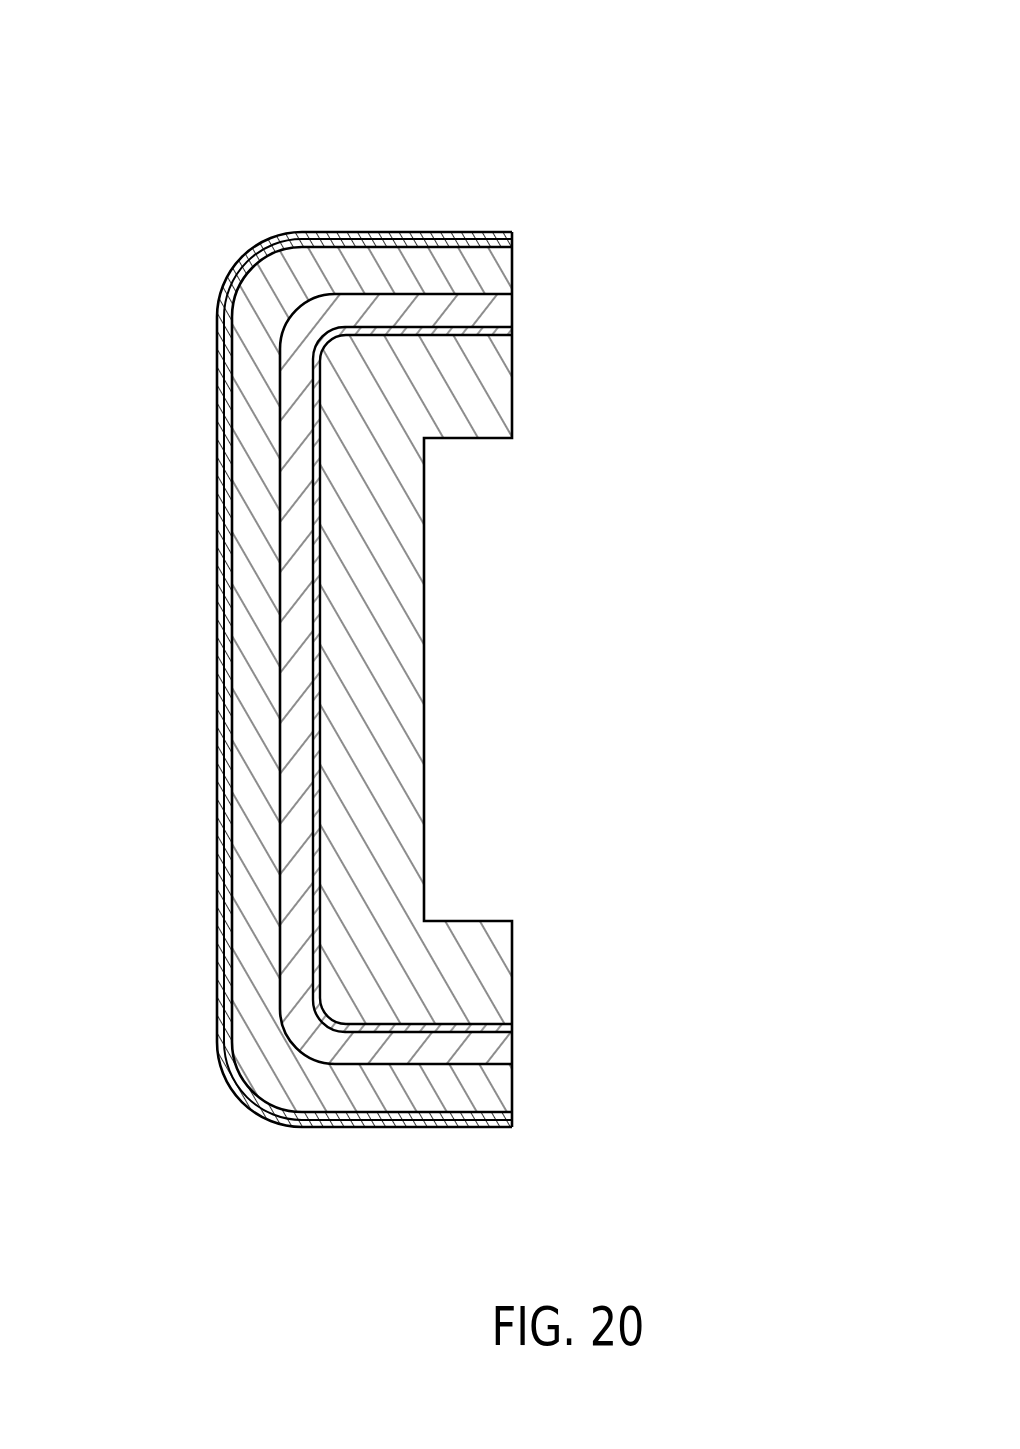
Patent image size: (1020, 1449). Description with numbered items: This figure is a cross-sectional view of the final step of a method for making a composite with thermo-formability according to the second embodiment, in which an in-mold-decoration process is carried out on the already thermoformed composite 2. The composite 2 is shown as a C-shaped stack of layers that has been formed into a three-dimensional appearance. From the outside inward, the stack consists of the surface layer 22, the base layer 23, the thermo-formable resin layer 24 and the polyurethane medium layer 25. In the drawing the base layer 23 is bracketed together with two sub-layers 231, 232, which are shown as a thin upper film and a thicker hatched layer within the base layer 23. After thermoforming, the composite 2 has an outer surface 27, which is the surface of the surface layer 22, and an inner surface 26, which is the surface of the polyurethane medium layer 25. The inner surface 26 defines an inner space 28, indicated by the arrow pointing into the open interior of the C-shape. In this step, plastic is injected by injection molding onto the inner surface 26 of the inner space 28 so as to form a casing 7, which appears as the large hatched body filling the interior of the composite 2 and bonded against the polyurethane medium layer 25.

The composite 2 is at (410, 571).
The casing 7 is at (407, 546).
The surface layer 22 is at (512, 234).
The base layer 23 is at (469, 669).
The first sub-layer 231 is at (512, 243).
The second sub-layer 232 is at (495, 276).
The thermo-formable resin layer 24 is at (500, 318).
The polyurethane medium layer 25 is at (512, 332).
The inner surface 26 is at (321, 688).
The outer surface 27 is at (217, 650).
The inner space 28 is at (522, 822).